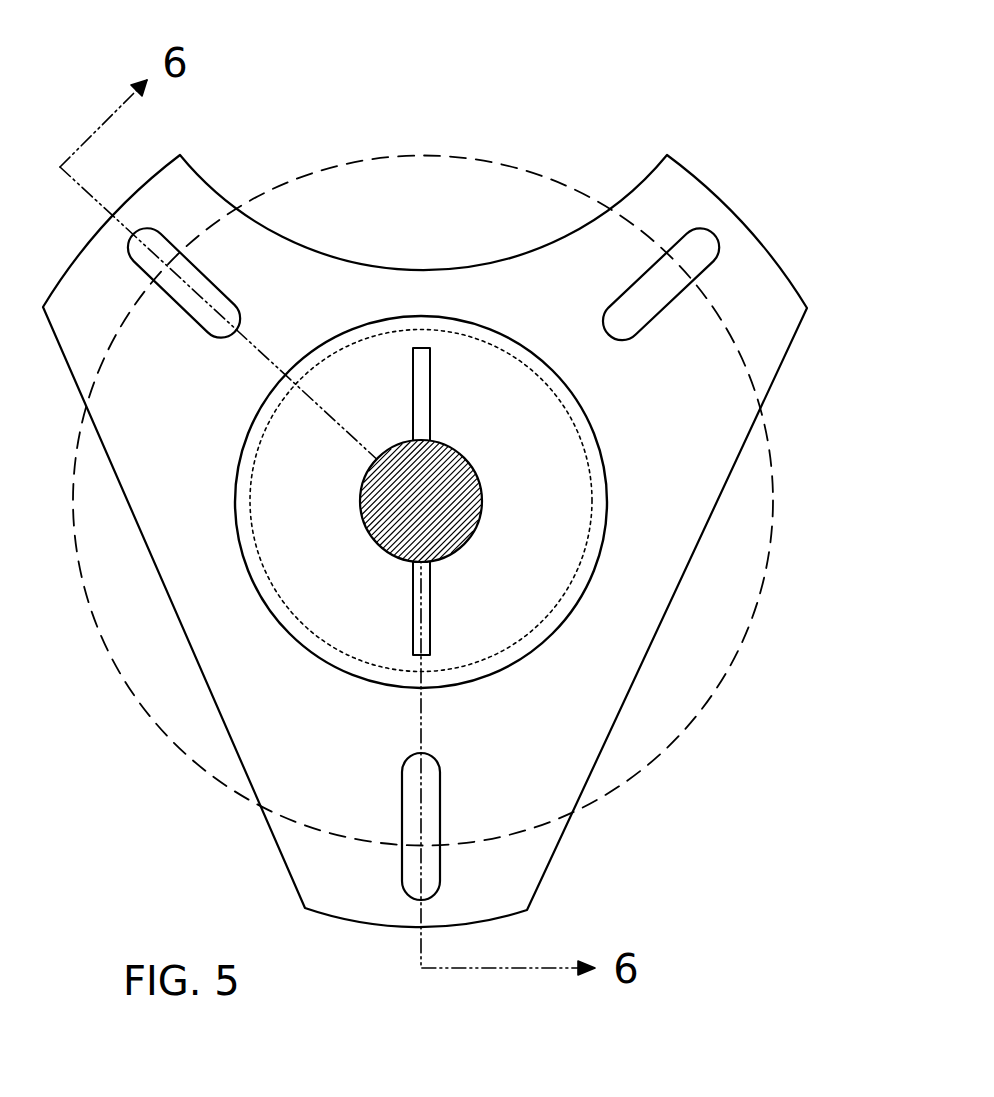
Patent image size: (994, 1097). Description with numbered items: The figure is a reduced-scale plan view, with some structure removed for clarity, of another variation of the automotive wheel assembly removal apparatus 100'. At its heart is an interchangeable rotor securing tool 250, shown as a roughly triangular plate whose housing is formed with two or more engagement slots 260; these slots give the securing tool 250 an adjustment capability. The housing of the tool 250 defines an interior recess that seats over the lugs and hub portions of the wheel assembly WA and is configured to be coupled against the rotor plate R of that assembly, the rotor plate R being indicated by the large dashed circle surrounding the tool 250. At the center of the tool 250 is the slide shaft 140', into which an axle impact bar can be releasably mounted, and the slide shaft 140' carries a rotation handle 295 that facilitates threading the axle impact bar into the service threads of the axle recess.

The automotive wheel assembly removal apparatus 100' is at (353, 605).
The slide shaft 140' is at (537, 628).
The interchangeable rotor securing tool 250 is at (203, 175).
The engagement slots 260 is at (164, 246).
The rotation handle 295 is at (413, 395).
The rotor plate R is at (469, 160).
The wheel assembly WA is at (418, 155).